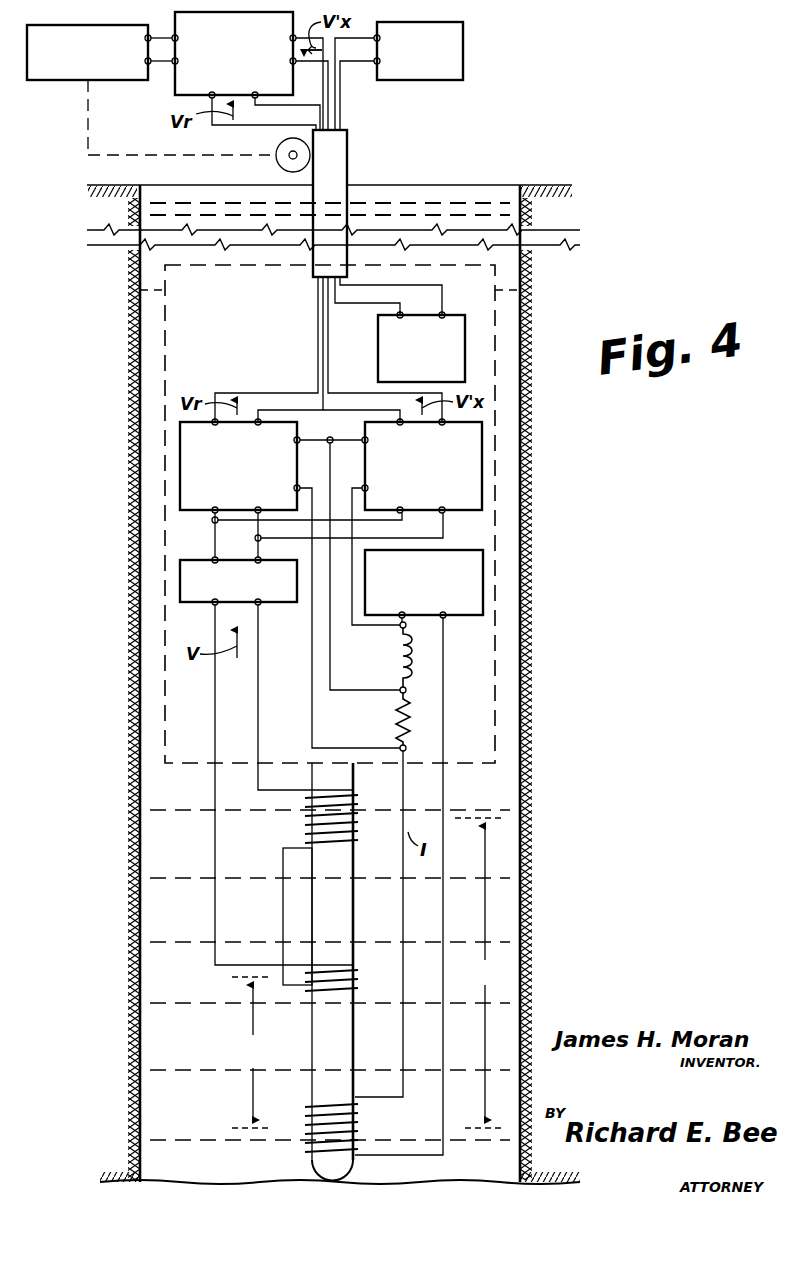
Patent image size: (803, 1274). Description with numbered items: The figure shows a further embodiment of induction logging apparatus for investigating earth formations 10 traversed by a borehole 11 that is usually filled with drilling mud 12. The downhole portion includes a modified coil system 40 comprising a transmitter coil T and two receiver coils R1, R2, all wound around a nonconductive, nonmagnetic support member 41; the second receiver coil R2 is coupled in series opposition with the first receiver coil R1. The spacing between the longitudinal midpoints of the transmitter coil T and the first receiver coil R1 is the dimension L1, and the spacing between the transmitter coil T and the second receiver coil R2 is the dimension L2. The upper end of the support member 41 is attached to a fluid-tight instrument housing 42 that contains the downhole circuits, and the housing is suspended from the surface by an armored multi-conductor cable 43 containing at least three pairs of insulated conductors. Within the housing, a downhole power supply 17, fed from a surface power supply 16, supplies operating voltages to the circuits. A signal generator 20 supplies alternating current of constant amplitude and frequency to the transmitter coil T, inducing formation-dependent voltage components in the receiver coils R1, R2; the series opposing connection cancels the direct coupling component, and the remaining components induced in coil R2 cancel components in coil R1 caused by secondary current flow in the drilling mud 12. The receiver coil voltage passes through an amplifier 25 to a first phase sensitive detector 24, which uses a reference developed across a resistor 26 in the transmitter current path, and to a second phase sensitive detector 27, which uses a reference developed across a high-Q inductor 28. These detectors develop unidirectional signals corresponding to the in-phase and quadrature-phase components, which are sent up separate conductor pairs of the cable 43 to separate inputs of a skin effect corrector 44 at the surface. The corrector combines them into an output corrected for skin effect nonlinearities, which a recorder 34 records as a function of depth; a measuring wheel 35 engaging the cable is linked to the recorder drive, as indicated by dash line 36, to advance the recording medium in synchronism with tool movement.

The earth formations 10 is at (570, 292).
The borehole 11 is at (518, 192).
The drilling mud 12 is at (420, 200).
The power supply 16 is at (436, 82).
The downhole power supply 17 is at (457, 314).
The signal generator 20 is at (476, 617).
The phase sensitive detector 24 is at (252, 464).
The amplifier 25 is at (203, 605).
The resistor 26 is at (398, 716).
The phase sensitive detector 27 is at (366, 432).
The inductor 28 is at (400, 658).
The recorder 34 is at (42, 81).
The measuring wheel 35 is at (276, 156).
The dash line 36 is at (88, 132).
The coil system 40 is at (364, 902).
The support member 41 is at (343, 1033).
The instrument housing 42 is at (464, 764).
The multi-conductor cable 43 is at (340, 148).
The skin effect corrector 44 is at (174, 90).
The first receiver coil R1 is at (356, 790).
The second receiver coil R2 is at (356, 978).
The transmitter coil T is at (310, 1152).
The spacing L1 is at (480, 973).
The spacing L2 is at (252, 1052).